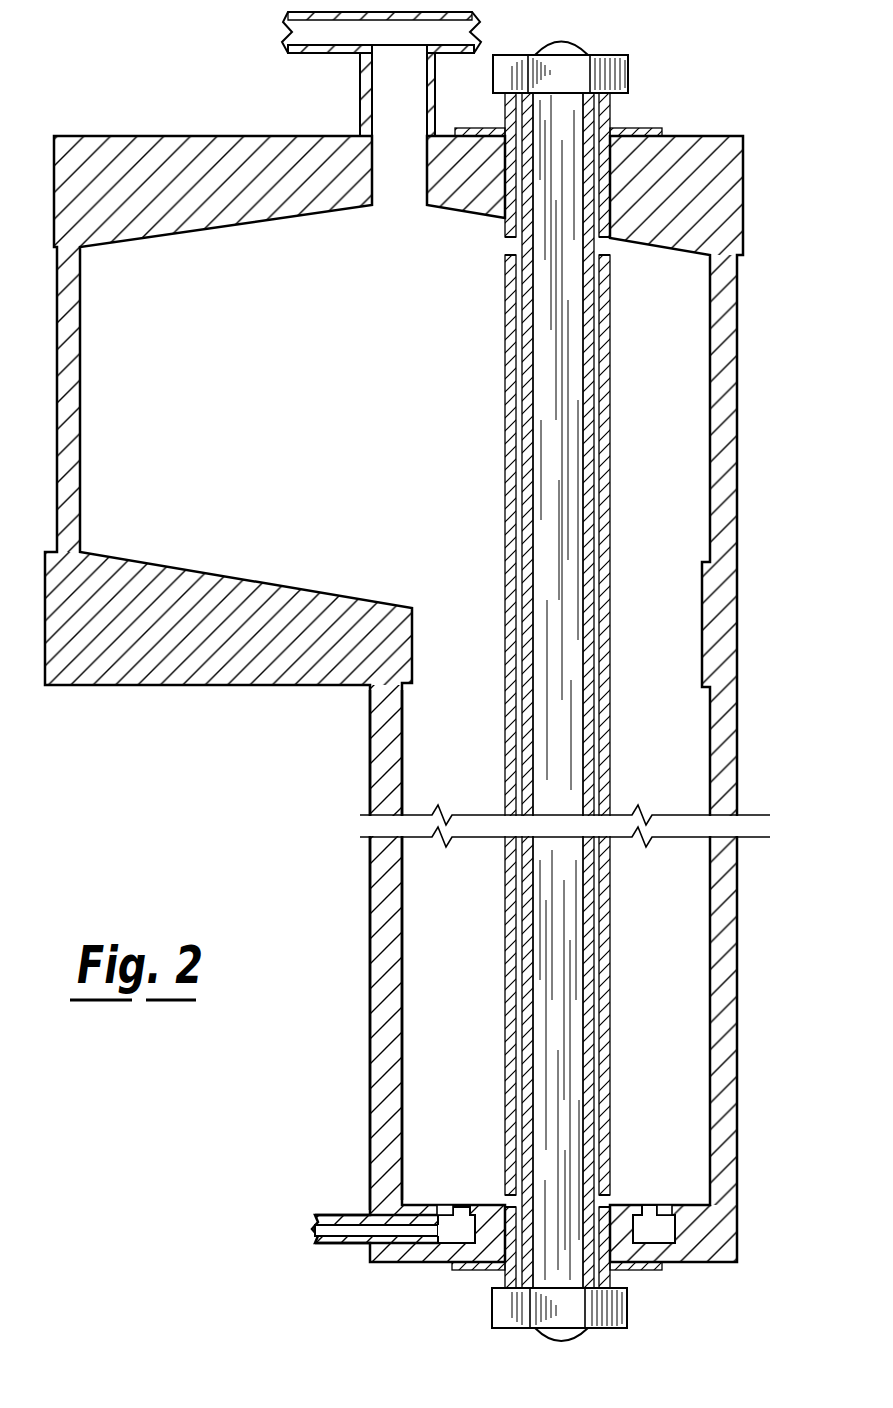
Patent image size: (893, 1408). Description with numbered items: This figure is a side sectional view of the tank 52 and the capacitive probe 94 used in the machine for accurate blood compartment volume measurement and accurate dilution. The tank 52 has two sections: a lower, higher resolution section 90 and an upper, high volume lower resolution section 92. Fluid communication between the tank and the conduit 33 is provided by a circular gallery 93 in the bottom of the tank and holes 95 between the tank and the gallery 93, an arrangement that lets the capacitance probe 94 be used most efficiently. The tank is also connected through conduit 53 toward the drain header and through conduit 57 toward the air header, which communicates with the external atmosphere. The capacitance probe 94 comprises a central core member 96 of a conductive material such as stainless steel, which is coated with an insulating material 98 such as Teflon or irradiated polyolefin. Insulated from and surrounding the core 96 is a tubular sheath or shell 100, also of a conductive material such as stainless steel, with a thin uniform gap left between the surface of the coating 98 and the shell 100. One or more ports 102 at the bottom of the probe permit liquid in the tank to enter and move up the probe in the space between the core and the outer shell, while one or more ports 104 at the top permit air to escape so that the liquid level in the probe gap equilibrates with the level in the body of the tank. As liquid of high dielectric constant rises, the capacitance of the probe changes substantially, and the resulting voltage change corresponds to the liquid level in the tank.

The conduit 33 is at (333, 1248).
The tank 52 is at (739, 353).
The conduit 53 is at (313, 56).
The conduit 57 is at (451, 55).
The lower, higher resolution section 90 is at (403, 972).
The upper, high volume lower resolution section 92 is at (80, 487).
The circular gallery 93 is at (447, 1250).
The capacitance probe 94 is at (566, 1341).
The holes 95 is at (453, 1209).
The central core member 96 is at (570, 666).
The insulating material 98 is at (595, 586).
The tubular sheath or shell 100 is at (610, 462).
The ports 102 is at (508, 1197).
The ports 104 is at (507, 254).